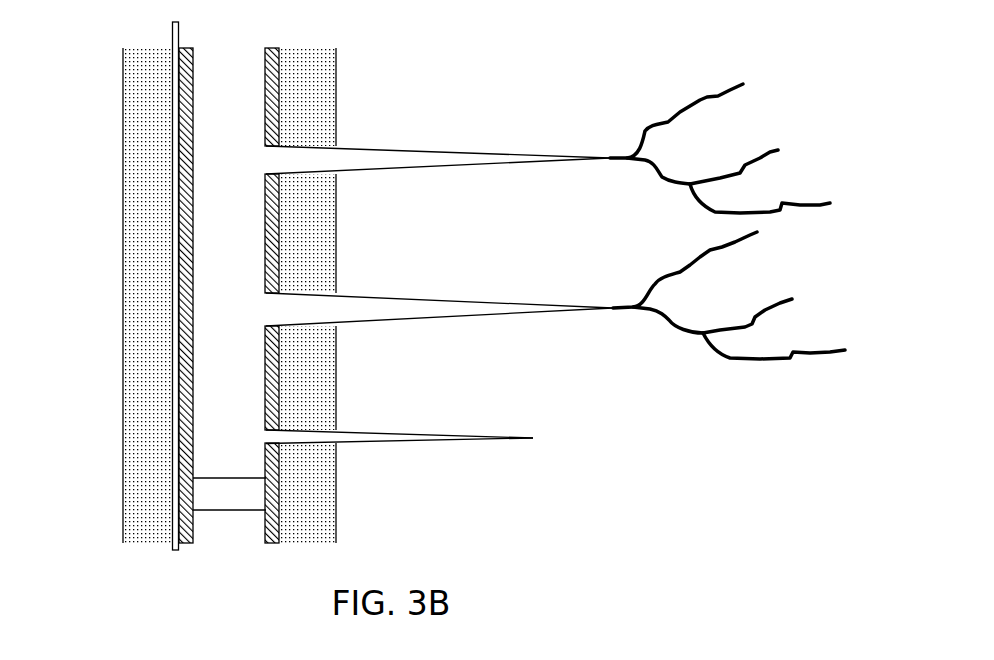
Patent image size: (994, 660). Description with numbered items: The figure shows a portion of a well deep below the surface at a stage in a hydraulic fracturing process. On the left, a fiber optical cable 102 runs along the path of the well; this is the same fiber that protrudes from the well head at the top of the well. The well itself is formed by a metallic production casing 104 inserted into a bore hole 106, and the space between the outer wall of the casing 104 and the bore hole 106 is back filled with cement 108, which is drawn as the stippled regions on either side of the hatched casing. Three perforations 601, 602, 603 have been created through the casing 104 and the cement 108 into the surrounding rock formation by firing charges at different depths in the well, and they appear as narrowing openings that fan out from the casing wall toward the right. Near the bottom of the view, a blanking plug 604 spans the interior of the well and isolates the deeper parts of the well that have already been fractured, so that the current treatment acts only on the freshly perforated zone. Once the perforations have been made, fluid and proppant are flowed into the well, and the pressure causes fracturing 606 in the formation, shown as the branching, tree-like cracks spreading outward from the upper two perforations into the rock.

The fiber optical cable 102 is at (174, 47).
The metallic production casing 104 is at (278, 85).
The bore hole 106 is at (123, 158).
The cement 108 is at (317, 112).
The perforation 601 is at (449, 152).
The perforation 602 is at (447, 298).
The perforation 603 is at (442, 435).
The blanking plug 604 is at (242, 497).
The fracturing 606 is at (656, 195).